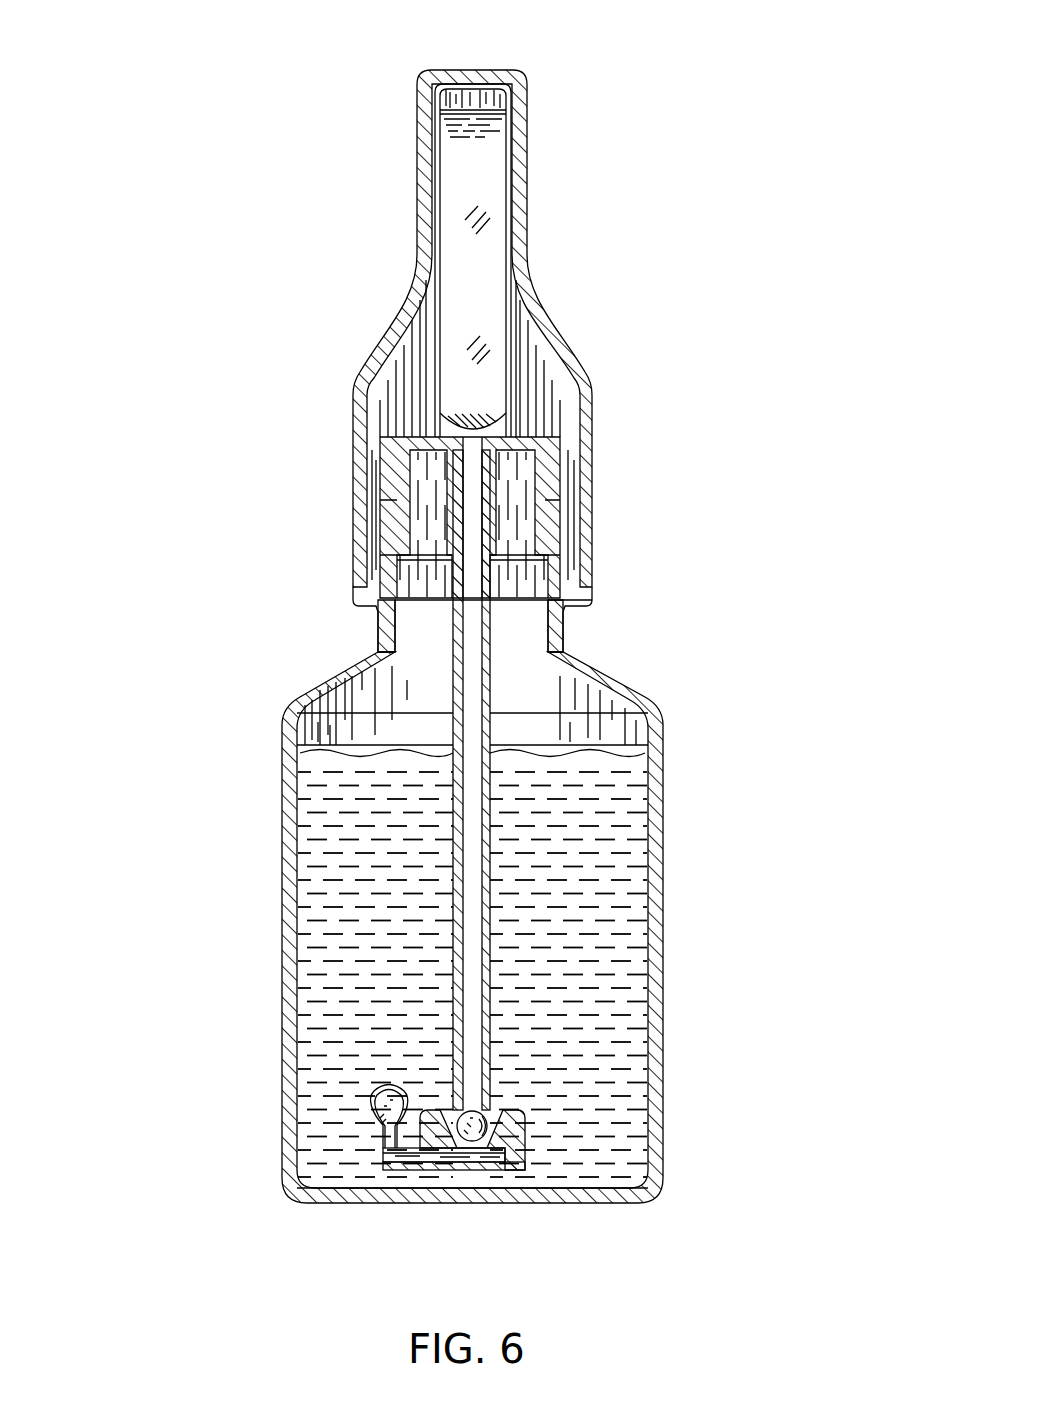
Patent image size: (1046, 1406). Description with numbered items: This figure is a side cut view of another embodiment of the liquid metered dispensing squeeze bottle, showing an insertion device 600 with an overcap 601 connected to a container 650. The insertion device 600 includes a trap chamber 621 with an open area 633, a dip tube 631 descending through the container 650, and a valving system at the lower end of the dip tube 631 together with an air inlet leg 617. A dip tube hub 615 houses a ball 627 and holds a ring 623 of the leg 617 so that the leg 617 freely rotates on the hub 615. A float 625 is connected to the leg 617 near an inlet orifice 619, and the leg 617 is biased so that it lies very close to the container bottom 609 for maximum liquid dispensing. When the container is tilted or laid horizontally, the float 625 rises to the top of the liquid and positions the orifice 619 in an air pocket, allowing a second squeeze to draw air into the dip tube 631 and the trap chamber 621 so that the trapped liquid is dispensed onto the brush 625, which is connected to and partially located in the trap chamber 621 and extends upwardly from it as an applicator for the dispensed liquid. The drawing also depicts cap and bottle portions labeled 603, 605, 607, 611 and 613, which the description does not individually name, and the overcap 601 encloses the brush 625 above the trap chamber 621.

The insertion device 600 is at (442, 328).
The overcap 601 is at (353, 466).
The cap inner wall / seal 603 is at (377, 521).
The dispensing tip 605 is at (448, 70).
The cap chamber 607 is at (555, 532).
The container bottom 609 is at (465, 1205).
The bottle body wall 611 is at (298, 698).
The cap flange 613 is at (382, 540).
The dip tube hub 615 is at (458, 1130).
The air inlet leg 617 is at (400, 1168).
The inlet orifice 619 is at (380, 1166).
The trap chamber 621 is at (545, 425).
The ring 623 is at (525, 1130).
The float 625 is at (470, 172).
The ball 627 is at (490, 1150).
The dip tube 631 is at (495, 630).
The open area 633 is at (440, 410).
The container 650 is at (482, 962).